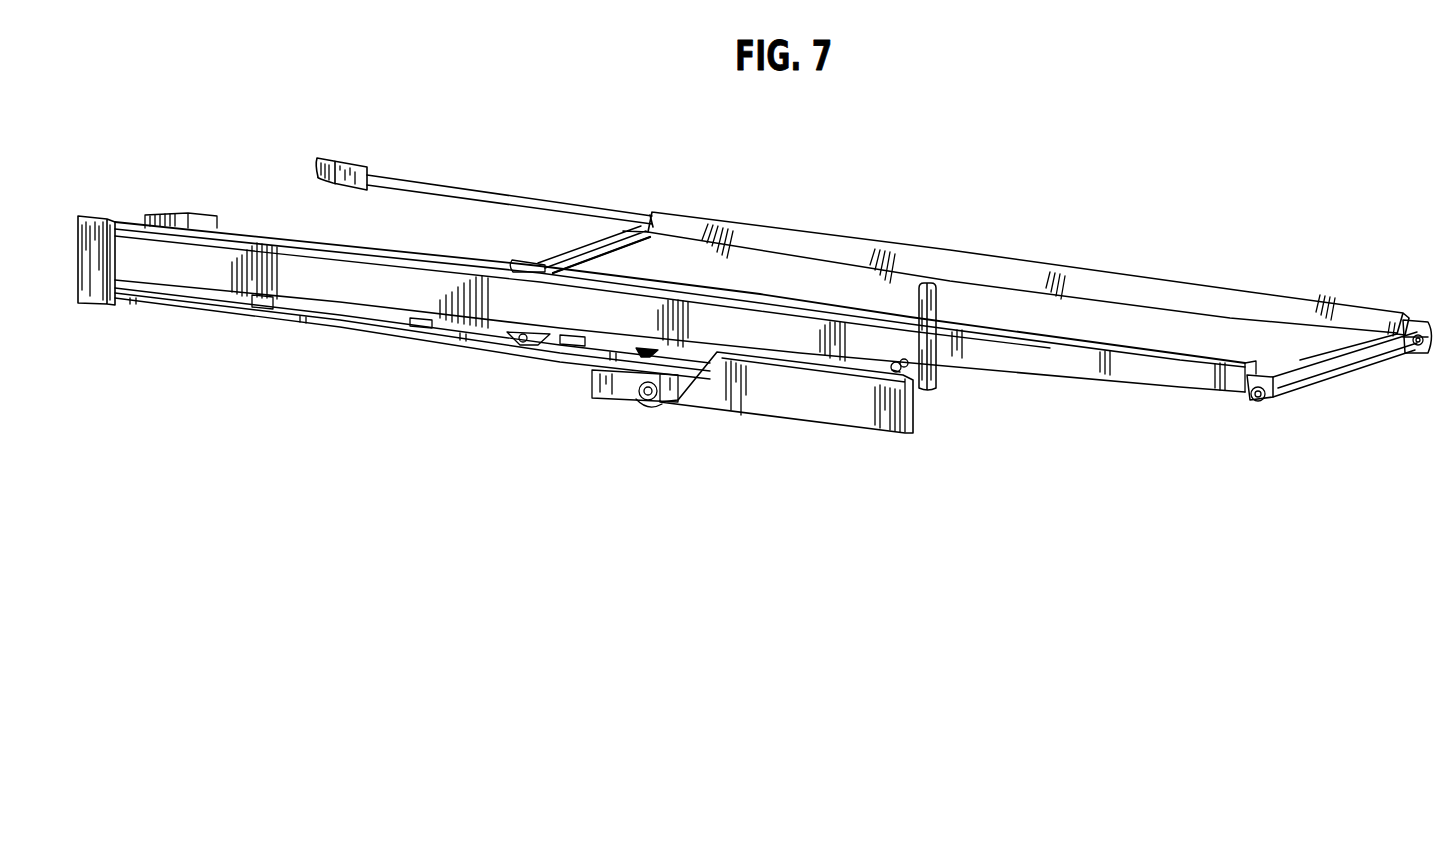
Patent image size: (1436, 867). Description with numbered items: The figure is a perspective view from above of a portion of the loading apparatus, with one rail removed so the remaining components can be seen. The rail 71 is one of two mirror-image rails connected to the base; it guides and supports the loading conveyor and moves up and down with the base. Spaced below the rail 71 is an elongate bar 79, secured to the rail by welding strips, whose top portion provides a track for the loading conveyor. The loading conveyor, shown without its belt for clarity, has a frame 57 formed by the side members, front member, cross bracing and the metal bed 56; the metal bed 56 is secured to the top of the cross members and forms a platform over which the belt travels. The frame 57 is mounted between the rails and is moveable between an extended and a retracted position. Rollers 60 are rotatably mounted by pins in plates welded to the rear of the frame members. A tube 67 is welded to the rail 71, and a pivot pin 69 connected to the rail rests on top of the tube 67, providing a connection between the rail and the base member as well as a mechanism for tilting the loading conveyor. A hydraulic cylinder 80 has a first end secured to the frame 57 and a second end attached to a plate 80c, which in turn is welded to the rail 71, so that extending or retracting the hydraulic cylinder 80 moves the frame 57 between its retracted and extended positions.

The metal bed 56 is at (1000, 298).
The frame 57 is at (1258, 268).
The rollers 60 is at (524, 346).
The tube 67 is at (782, 402).
The pivot pin 69 is at (905, 362).
The rail 71 is at (352, 293).
The elongate bar 79 is at (339, 323).
The hydraulic cylinder 80 is at (468, 196).
The plate 80c is at (339, 158).